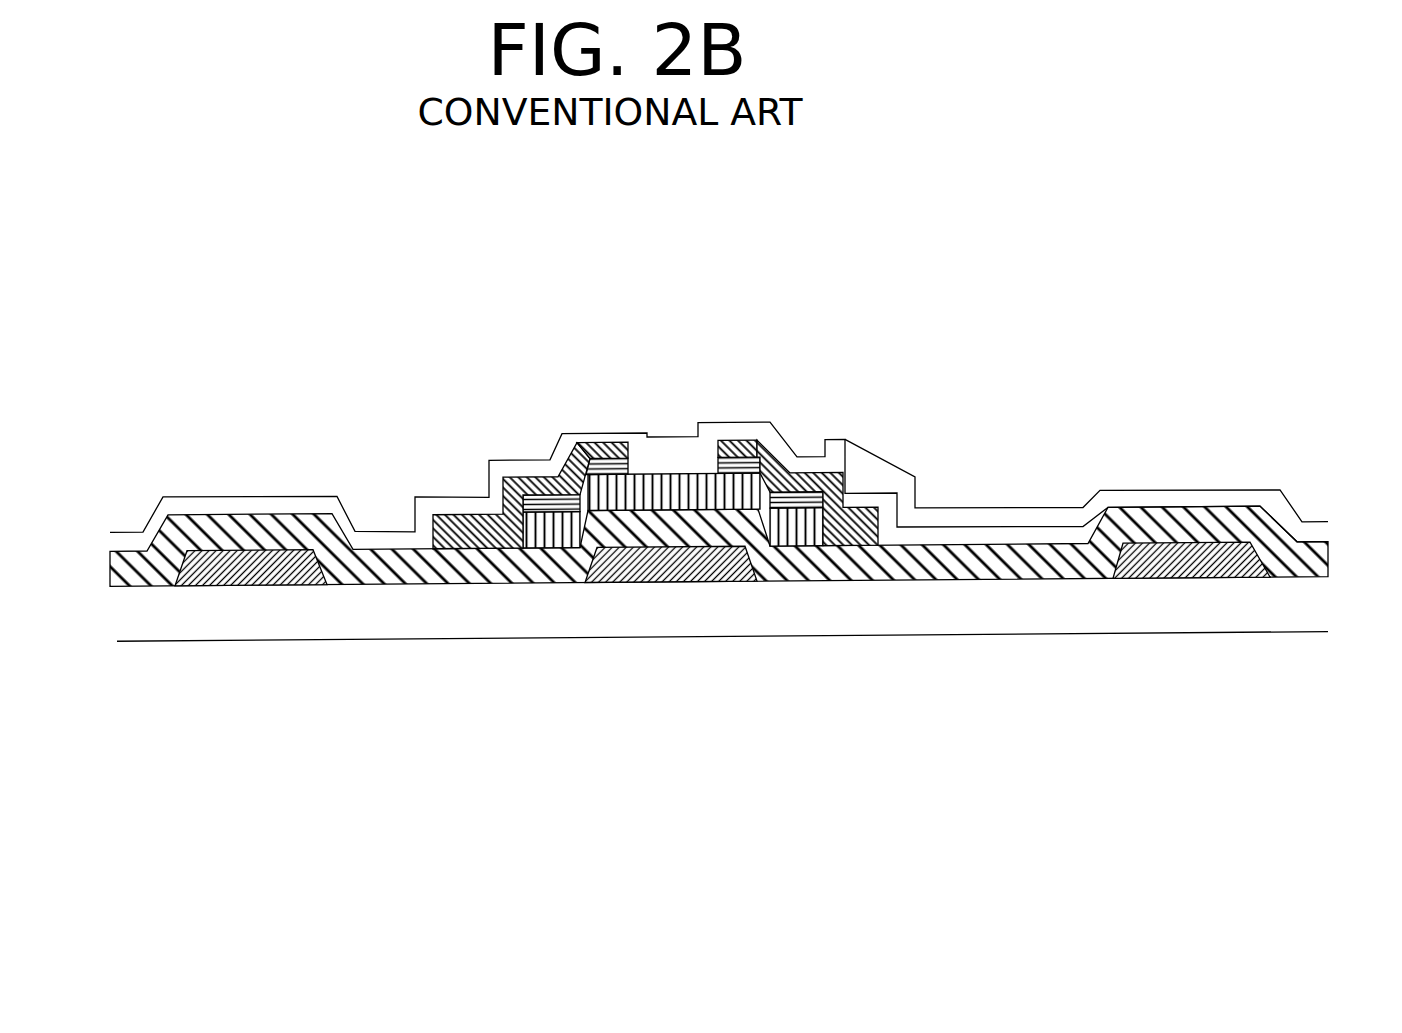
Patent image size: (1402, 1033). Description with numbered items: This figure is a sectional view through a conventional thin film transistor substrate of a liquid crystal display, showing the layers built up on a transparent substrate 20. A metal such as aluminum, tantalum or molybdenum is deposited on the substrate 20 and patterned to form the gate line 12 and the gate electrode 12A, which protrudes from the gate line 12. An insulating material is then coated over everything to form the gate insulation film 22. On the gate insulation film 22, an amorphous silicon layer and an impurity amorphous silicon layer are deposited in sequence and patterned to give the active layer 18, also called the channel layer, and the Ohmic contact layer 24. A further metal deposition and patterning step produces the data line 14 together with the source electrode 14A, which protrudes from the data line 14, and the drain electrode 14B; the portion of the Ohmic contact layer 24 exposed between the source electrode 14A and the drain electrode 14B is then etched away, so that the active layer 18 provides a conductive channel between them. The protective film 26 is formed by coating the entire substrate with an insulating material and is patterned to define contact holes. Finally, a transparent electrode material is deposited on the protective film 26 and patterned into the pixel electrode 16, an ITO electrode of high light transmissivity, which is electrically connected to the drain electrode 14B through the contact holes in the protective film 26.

The gate line 12 is at (242, 586).
The gate electrode 12A is at (673, 586).
The data line 14 is at (452, 516).
The source electrode 14A is at (563, 440).
The drain electrode 14B is at (832, 476).
The pixel electrode 16 is at (1010, 514).
The active layer 18 is at (523, 551).
The transparent substrate 20 is at (845, 634).
The gate insulation film 22 is at (948, 576).
The Ohmic contact layer 24 is at (760, 443).
The protective film 26 is at (608, 434).